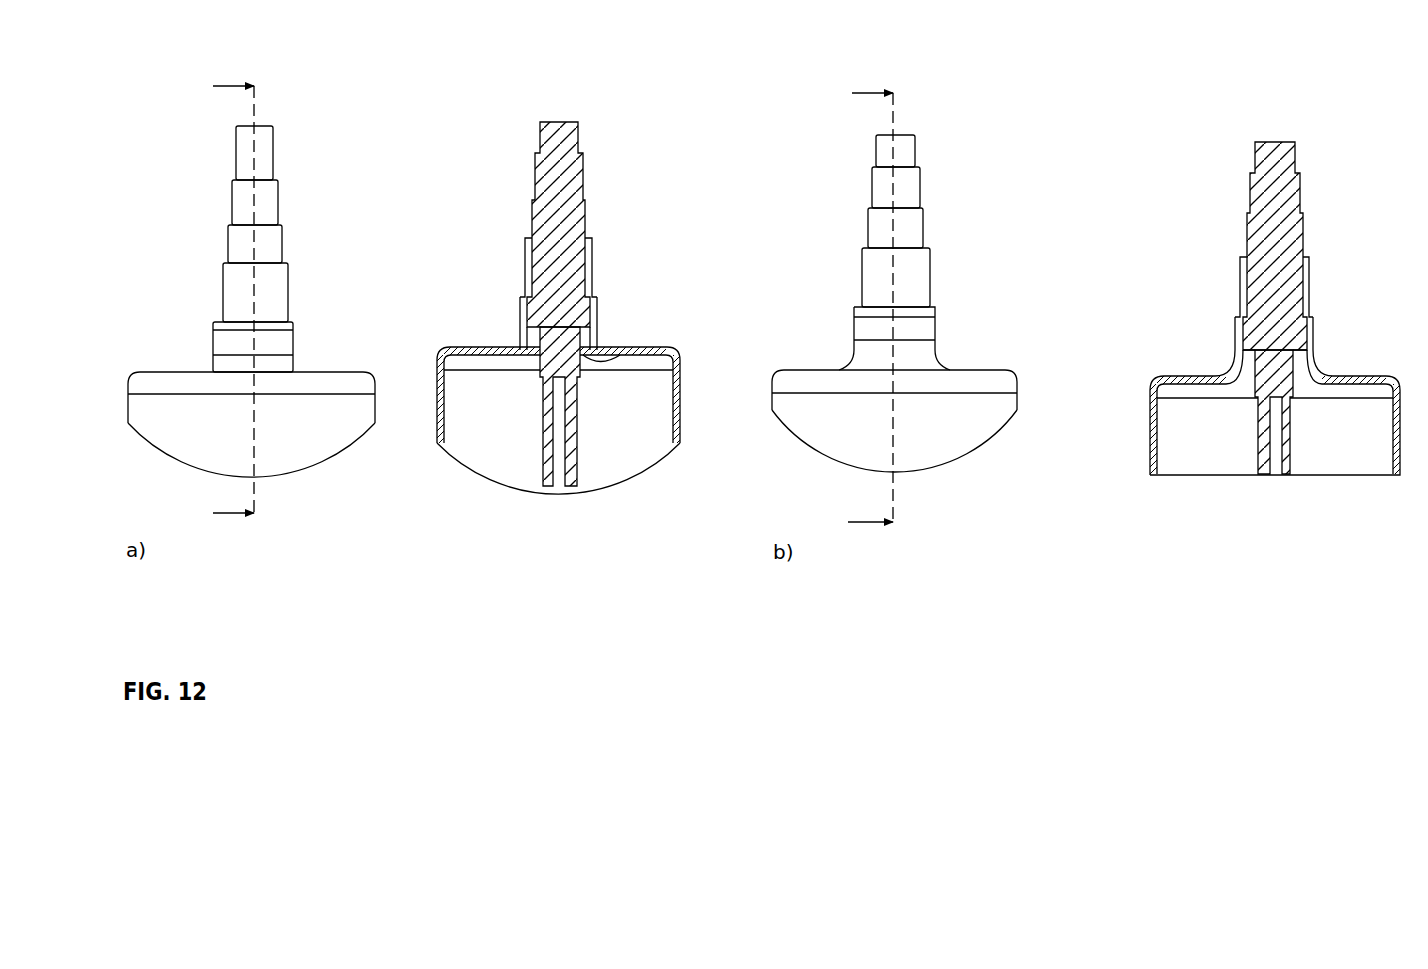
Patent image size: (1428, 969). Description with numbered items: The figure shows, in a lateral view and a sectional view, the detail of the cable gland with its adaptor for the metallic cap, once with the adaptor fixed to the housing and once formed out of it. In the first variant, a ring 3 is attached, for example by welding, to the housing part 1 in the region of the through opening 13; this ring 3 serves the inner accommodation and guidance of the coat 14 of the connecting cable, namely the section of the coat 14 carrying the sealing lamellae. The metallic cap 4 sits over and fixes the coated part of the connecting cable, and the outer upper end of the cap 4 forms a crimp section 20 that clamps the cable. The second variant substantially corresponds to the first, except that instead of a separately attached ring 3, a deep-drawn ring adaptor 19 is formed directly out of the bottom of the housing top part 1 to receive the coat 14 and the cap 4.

The housing part 1 is at (678, 407).
The ring 3 is at (597, 333).
The metallic cap 4 is at (525, 252).
The through opening 13 is at (627, 352).
The coat 14 is at (583, 252).
The ring adaptor 19 is at (1227, 373).
The crimp section 20 is at (585, 208).